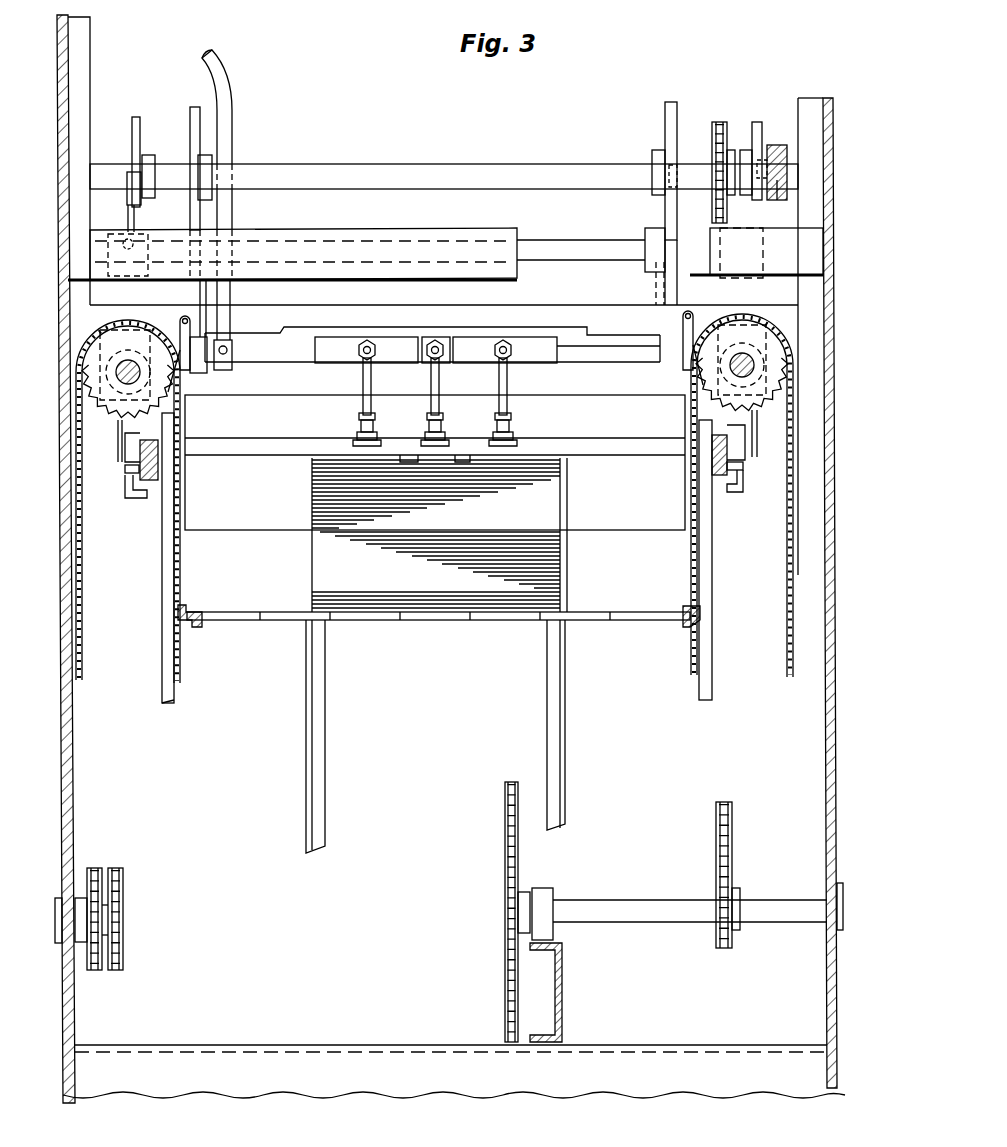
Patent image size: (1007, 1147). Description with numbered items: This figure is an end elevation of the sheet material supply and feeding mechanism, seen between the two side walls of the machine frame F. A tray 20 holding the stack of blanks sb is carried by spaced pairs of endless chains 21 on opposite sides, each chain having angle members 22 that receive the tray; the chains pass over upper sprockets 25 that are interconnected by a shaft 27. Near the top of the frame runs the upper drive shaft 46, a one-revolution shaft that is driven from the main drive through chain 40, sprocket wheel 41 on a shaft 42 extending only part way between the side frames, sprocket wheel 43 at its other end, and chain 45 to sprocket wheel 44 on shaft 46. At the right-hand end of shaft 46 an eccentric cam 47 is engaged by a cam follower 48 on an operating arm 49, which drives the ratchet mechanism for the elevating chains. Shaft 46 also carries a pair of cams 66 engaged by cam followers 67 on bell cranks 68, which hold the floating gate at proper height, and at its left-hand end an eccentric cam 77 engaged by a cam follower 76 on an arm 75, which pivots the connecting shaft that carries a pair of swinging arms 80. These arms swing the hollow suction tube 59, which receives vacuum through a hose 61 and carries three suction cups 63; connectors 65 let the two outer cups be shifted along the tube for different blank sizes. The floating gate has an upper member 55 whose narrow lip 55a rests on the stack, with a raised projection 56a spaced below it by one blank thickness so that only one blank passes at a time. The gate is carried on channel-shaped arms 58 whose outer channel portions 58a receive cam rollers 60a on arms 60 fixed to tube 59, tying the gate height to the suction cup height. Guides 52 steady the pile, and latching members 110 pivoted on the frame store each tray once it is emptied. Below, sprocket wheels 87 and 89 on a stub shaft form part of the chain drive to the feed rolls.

The frame F is at (73, 786).
The tray 20 is at (465, 622).
The endless chain 21 is at (86, 640).
The angle member 22 is at (193, 626).
The sprocket 25 is at (148, 400).
The shaft 27 is at (140, 376).
The chain 40 is at (519, 835).
The sprocket wheel 41 is at (510, 900).
The shaft 42 is at (598, 906).
The sprocket wheel 43 is at (726, 911).
The sprocket wheel 44 is at (731, 134).
The chain 45 is at (718, 122).
The upper drive shaft 46 is at (383, 173).
The eccentric cam 47 is at (758, 126).
The cam follower 48 is at (776, 154).
The operating arm 49 is at (778, 182).
The guide 52 is at (318, 745).
The upper gate member 55 is at (251, 418).
The lip 55a is at (456, 444).
The raised projection 56a is at (414, 452).
The arm 58 is at (138, 500).
The channel portion 58a is at (136, 468).
The hollow tube 59 is at (606, 352).
The arm 60 is at (118, 425).
The cam roller 60a is at (130, 449).
The hose 61 is at (223, 72).
The suction cup 63 is at (370, 388).
The connector 65 is at (345, 362).
The cam 66 is at (193, 108).
The cam follower 67 is at (192, 178).
The bell crank 68 is at (662, 208).
The arm 75 is at (131, 220).
The cam follower 76 is at (132, 184).
The eccentric cam 77 is at (137, 122).
The swinging arm 80 is at (228, 252).
The sprocket wheel 87 is at (96, 868).
The sprocket wheel 89 is at (118, 896).
The latching member 110 is at (180, 326).
The stack of blanks sb is at (439, 535).